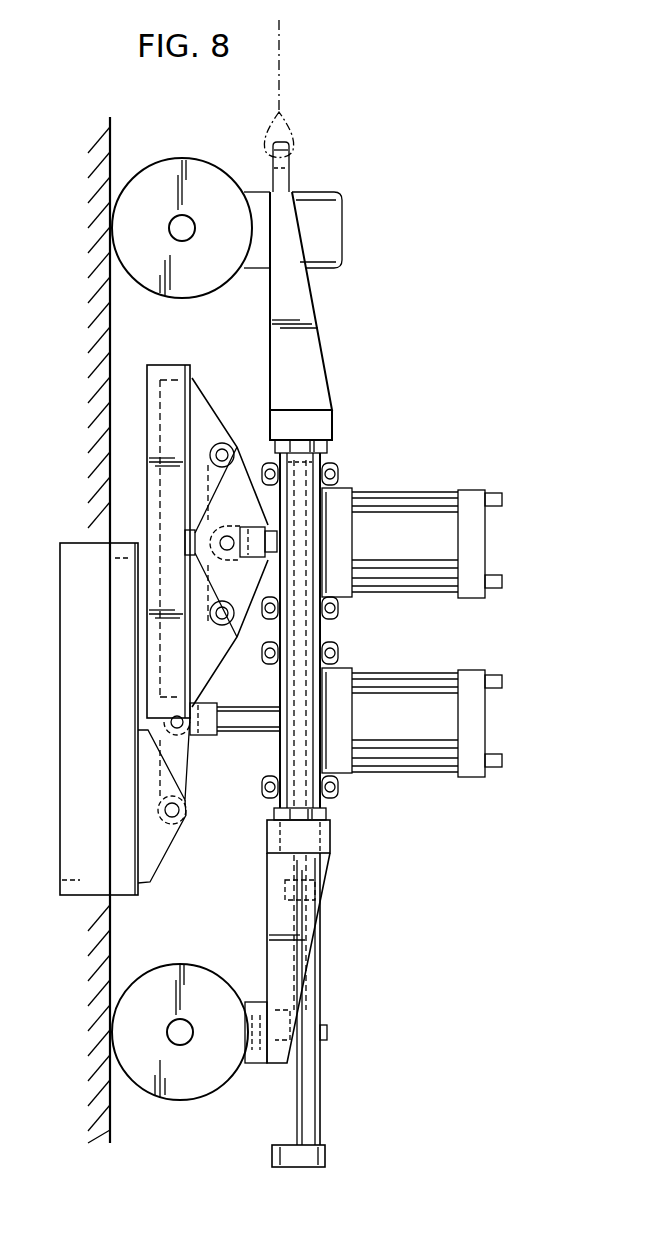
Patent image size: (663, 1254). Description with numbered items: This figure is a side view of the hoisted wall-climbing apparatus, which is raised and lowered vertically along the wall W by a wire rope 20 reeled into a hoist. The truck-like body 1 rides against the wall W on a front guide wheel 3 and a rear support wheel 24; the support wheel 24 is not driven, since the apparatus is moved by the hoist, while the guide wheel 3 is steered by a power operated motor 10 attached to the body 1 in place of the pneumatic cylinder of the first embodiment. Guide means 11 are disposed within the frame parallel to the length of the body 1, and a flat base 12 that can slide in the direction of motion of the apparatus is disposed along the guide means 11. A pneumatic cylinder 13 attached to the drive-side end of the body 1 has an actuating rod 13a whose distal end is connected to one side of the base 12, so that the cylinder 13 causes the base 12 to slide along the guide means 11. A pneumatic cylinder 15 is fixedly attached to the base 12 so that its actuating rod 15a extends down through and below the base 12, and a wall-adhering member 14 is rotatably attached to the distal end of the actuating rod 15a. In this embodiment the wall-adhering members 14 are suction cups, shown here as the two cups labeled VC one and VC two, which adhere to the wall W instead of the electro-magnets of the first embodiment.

The wall W is at (112, 147).
The guide wheel 3 is at (212, 172).
The wire rope 20 is at (282, 103).
The power operated motor 10 is at (335, 242).
The truck-like body 1 is at (341, 371).
The guide means 11 is at (314, 476).
The flat base 12 is at (336, 506).
The pneumatic cylinder 15 is at (425, 506).
The wall-adhering member 14 is at (184, 356).
The actuating rod 15a is at (266, 528).
The actuating rod 13a is at (328, 802).
The pneumatic cylinder 13 is at (320, 993).
The support wheel 24 is at (195, 968).